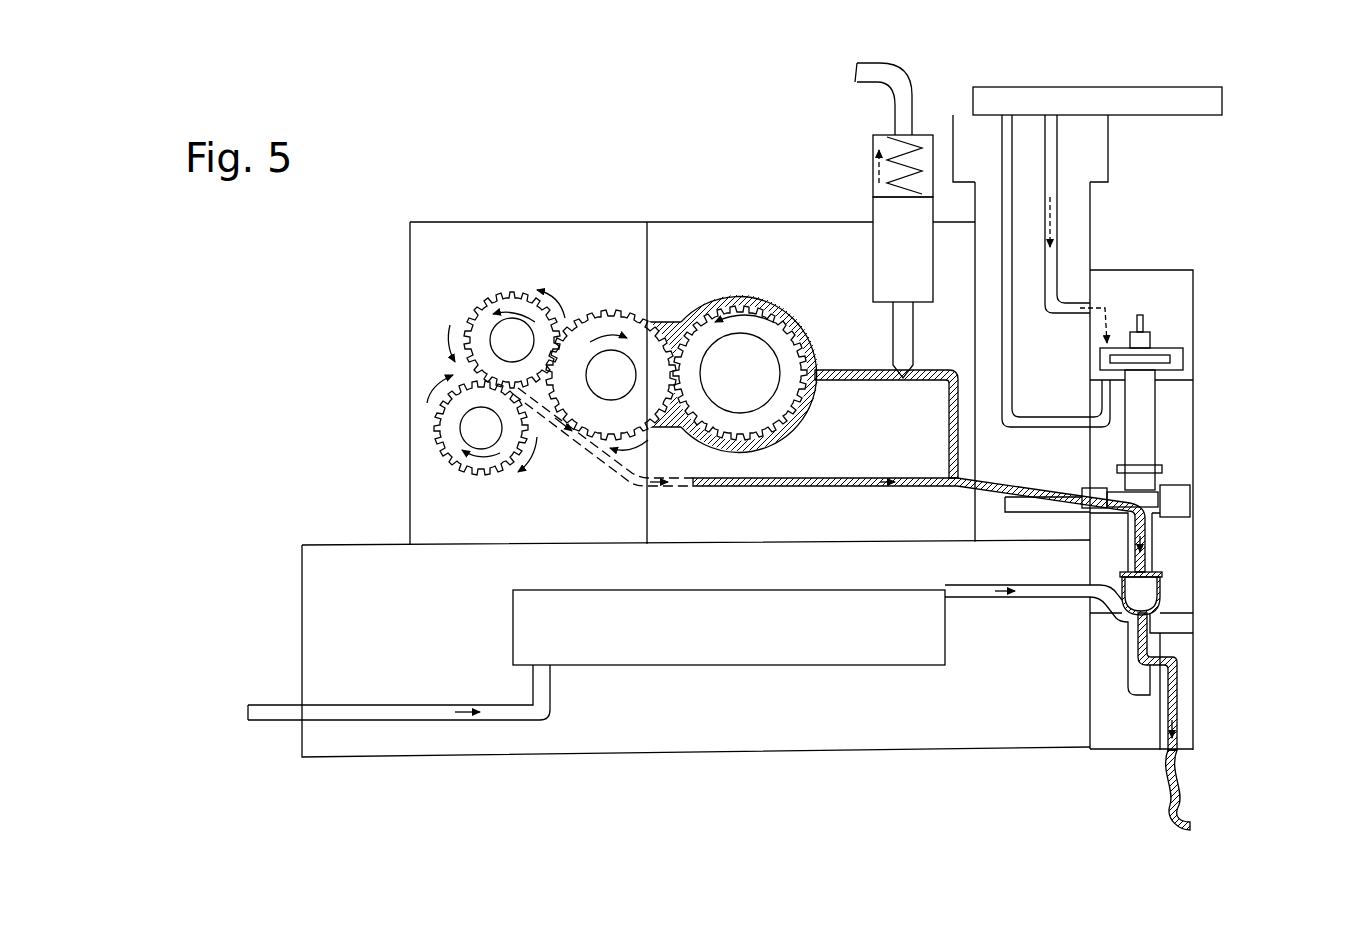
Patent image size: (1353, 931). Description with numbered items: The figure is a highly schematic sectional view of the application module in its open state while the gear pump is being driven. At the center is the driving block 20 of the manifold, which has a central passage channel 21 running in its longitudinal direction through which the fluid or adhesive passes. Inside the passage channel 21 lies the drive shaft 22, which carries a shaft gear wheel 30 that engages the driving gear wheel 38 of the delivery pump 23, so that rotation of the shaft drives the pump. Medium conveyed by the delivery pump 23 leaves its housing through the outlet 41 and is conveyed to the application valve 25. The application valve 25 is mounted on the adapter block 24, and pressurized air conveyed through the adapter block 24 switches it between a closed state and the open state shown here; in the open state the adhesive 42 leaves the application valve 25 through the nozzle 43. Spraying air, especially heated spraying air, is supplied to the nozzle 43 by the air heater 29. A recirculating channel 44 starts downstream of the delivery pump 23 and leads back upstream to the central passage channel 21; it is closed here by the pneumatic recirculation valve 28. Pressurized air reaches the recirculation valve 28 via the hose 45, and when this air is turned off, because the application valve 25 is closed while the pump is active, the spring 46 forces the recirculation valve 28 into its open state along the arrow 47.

The driving block 20 is at (680, 240).
The central passage channel 21 is at (747, 290).
The drive shaft 22 is at (762, 368).
The delivery pump 23 is at (473, 240).
The adapter block 24 is at (1075, 222).
The application valve 25 is at (1178, 585).
The recirculation valve 28 is at (858, 138).
The air heater 29 is at (752, 722).
The shaft gear wheel 30 is at (703, 332).
The driving gear wheel 38 is at (600, 310).
The outlet 41 is at (640, 490).
The adhesive 42 is at (1178, 777).
The nozzle 43 is at (1190, 695).
The recirculating channel 44 is at (917, 378).
The hose 45 is at (887, 87).
The spring 46 is at (913, 153).
The arrow 47 is at (877, 177).